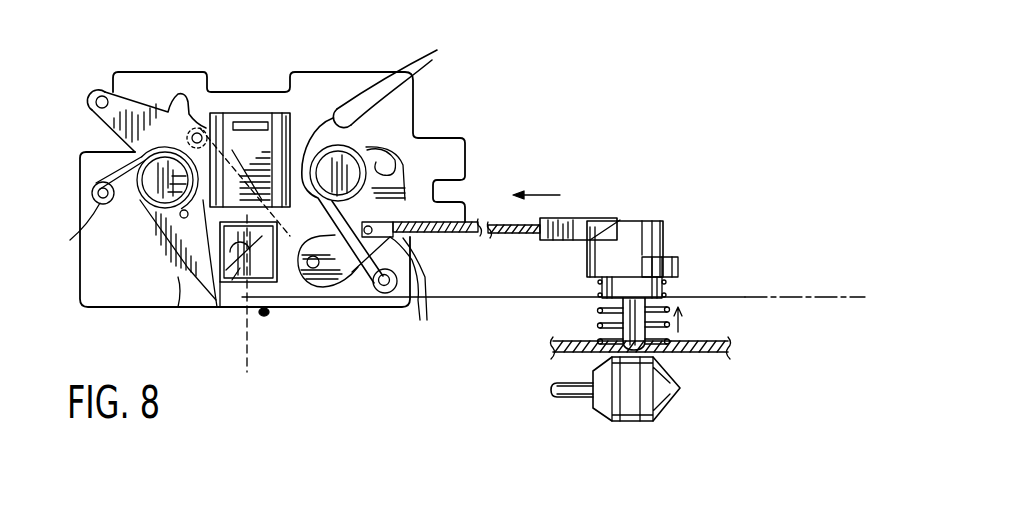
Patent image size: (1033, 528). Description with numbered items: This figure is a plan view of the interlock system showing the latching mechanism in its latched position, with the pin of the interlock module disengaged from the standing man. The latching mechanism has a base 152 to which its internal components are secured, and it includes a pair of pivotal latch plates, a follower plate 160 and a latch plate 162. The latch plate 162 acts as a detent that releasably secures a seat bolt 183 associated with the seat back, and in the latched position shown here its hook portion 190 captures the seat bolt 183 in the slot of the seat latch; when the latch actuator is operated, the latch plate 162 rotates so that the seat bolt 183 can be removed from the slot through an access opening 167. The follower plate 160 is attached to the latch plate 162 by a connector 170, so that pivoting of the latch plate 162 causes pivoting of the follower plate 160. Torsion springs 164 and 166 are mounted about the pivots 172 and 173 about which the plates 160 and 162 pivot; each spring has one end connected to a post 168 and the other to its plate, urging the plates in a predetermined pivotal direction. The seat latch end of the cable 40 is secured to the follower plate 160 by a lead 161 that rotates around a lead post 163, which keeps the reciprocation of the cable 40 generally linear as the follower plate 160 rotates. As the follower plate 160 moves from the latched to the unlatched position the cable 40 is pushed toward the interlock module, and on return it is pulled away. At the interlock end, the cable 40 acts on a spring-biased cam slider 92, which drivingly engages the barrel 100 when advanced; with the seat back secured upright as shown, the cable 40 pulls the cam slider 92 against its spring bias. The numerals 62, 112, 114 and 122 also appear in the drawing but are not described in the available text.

The cable 40 is at (502, 227).
The support plate 62 is at (712, 341).
The cam slider 92 is at (578, 227).
The barrel 100 is at (637, 218).
The spring 112 is at (600, 298).
The flange 114 is at (670, 292).
The nozzle 122 is at (628, 421).
The base 152 is at (327, 80).
The follower plate 160 is at (392, 161).
The lead 161 is at (427, 330).
The latch plate 162 is at (178, 307).
The lead post 163 is at (412, 330).
The torsion spring 164 is at (340, 148).
The torsion spring 166 is at (145, 212).
The access opening 167 is at (260, 305).
The post 168 is at (407, 298).
The connector 170 is at (293, 286).
The pivot 172 is at (165, 172).
The pivot 173 is at (304, 172).
The seat bolt 183 is at (218, 275).
The hook portion 190 is at (238, 300).